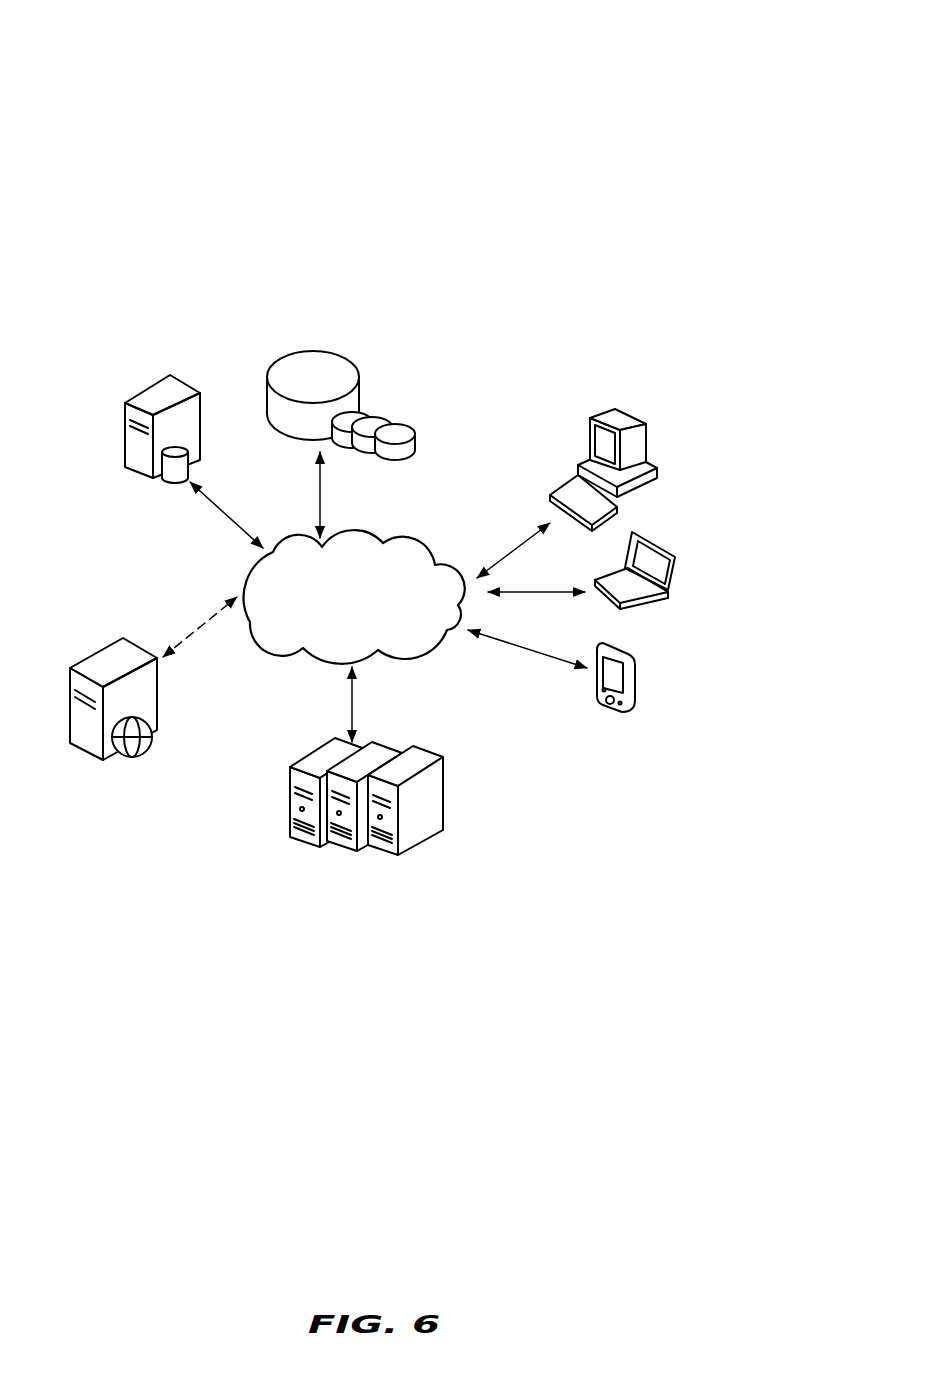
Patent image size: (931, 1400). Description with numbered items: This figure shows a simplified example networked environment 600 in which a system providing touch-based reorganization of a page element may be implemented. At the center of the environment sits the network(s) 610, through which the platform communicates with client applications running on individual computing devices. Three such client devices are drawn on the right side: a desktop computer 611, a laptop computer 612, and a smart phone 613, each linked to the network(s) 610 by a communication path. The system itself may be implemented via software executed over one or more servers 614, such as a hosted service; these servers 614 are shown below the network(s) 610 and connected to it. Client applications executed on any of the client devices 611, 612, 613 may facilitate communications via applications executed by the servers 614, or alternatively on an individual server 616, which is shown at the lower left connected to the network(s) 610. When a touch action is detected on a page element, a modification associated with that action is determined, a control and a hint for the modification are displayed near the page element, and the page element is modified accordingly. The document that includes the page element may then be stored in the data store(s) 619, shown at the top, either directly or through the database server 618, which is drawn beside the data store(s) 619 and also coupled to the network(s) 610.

The network environment 600 is at (411, 429).
The network(s) 610 is at (357, 519).
The desktop computer 611 is at (646, 402).
The laptop computer 612 is at (677, 531).
The smart phone 613 is at (648, 646).
The servers 614 is at (318, 741).
The individual server 616 is at (92, 645).
The database server 618 is at (164, 491).
The data store(s) 619 is at (331, 329).